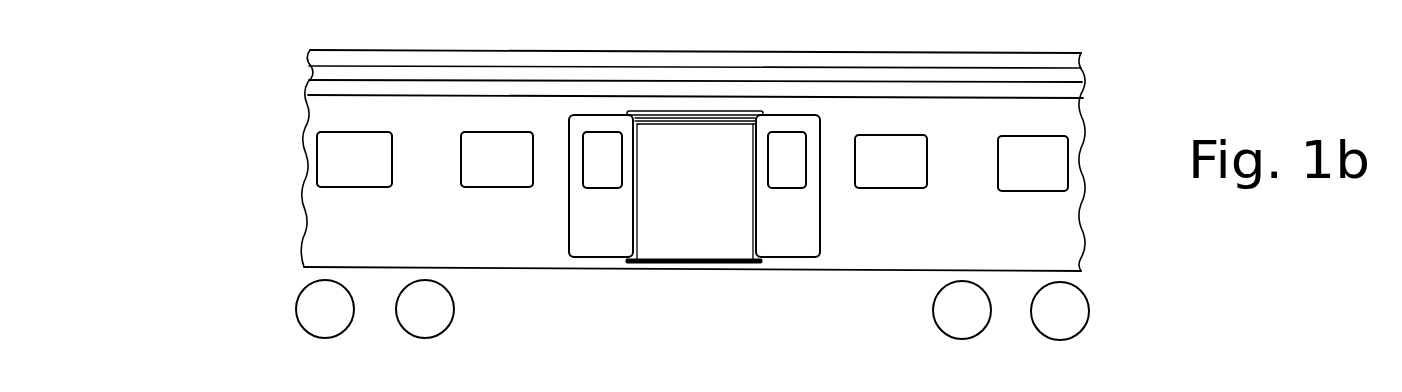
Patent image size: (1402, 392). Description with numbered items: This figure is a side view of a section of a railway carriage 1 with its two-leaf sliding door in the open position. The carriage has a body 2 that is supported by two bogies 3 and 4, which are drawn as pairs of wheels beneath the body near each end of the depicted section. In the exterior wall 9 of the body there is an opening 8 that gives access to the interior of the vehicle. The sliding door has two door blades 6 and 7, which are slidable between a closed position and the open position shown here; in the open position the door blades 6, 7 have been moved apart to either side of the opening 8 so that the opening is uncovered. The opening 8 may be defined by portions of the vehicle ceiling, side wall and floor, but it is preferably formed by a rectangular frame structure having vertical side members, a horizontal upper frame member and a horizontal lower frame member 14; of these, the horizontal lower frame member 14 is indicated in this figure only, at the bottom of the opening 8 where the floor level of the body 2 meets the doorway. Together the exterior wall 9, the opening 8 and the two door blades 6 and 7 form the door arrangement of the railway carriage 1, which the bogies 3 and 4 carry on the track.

The railway carriage 1 is at (797, 34).
The body 2 is at (528, 243).
The bogie 3 is at (296, 303).
The bogie 4 is at (1098, 310).
The door blade 6 is at (588, 246).
The door blade 7 is at (793, 245).
The opening 8 is at (690, 282).
The exterior wall 9 is at (855, 237).
The horizontal lower frame member 14 is at (713, 240).